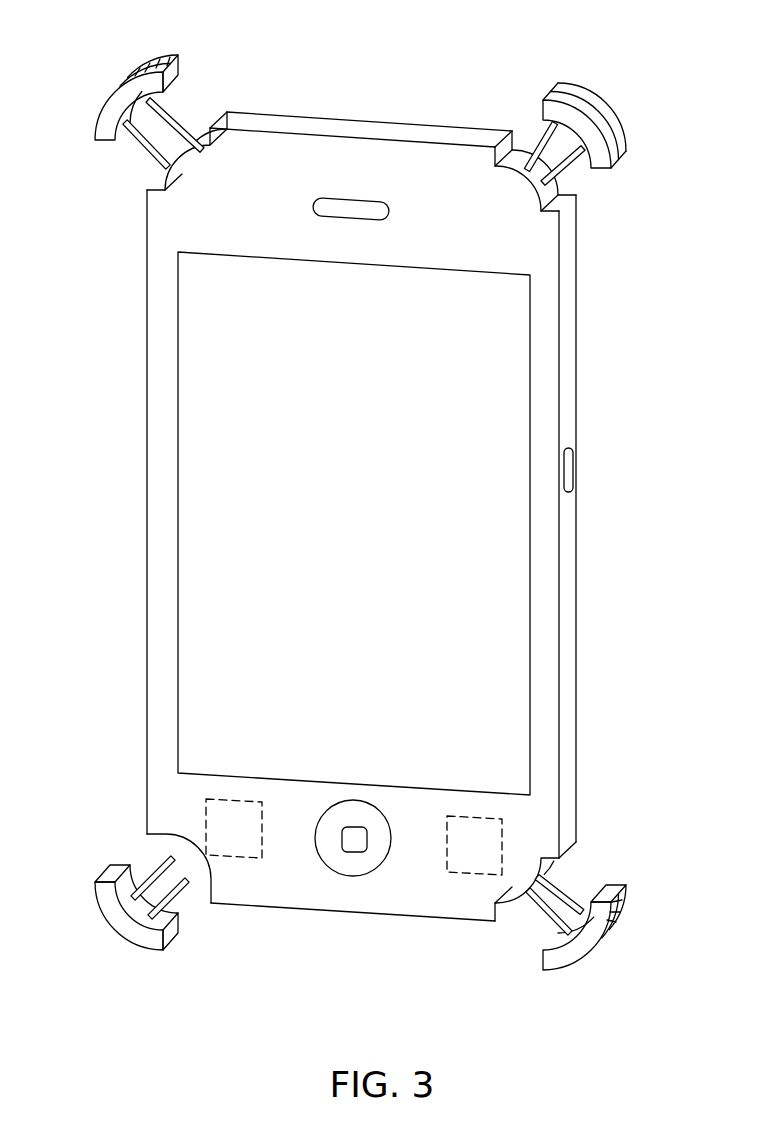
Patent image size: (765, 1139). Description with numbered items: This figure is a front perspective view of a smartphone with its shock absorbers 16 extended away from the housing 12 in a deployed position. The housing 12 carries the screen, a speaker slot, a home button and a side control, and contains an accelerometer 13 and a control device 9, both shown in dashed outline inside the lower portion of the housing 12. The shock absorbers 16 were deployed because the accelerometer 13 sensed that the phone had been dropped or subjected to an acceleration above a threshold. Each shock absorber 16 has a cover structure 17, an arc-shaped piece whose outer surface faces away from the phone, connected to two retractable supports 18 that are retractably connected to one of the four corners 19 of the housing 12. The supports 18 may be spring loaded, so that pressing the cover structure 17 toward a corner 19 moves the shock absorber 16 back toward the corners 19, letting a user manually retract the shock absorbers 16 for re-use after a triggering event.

The housing 12 is at (568, 298).
The control device 9 is at (235, 856).
The accelerometer 13 is at (482, 874).
The shock absorbers 16 is at (364, 521).
The cover structure 17 is at (181, 63).
The retractable supports 18 is at (180, 118).
The corners 19 is at (183, 191).